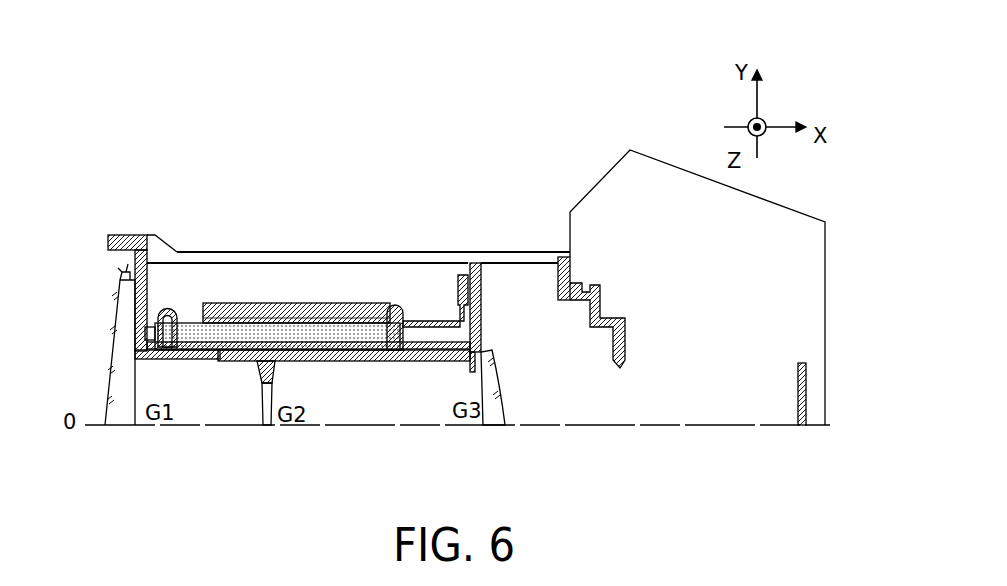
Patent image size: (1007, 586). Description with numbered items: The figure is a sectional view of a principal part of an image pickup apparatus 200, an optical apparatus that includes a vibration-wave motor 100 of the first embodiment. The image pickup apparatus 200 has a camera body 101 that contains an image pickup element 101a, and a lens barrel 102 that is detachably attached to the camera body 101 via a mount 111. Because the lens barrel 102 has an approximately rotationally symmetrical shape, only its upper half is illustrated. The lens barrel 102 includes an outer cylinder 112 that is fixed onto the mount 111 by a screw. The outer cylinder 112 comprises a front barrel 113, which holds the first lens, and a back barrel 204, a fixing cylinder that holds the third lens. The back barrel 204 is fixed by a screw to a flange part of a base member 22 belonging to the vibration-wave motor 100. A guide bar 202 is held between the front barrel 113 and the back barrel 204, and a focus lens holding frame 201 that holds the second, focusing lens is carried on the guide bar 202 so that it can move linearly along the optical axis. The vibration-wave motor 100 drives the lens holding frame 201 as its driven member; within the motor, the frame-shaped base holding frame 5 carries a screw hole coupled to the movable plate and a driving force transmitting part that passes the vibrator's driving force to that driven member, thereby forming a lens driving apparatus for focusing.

The image pickup apparatus 200 is at (217, 94).
The front barrel 113 is at (133, 266).
The vibration-wave motor 100 is at (237, 297).
The base holding frame 5 is at (313, 305).
The lens barrel 102 is at (325, 252).
The base member 22 is at (390, 320).
The guide bar 202 is at (433, 350).
The back barrel 204 is at (455, 300).
The outer cylinder 112 is at (490, 253).
The mount 111 is at (566, 262).
The camera body 101 is at (602, 177).
The image pickup element 101a is at (795, 398).
The lens holding frame 201 is at (262, 381).